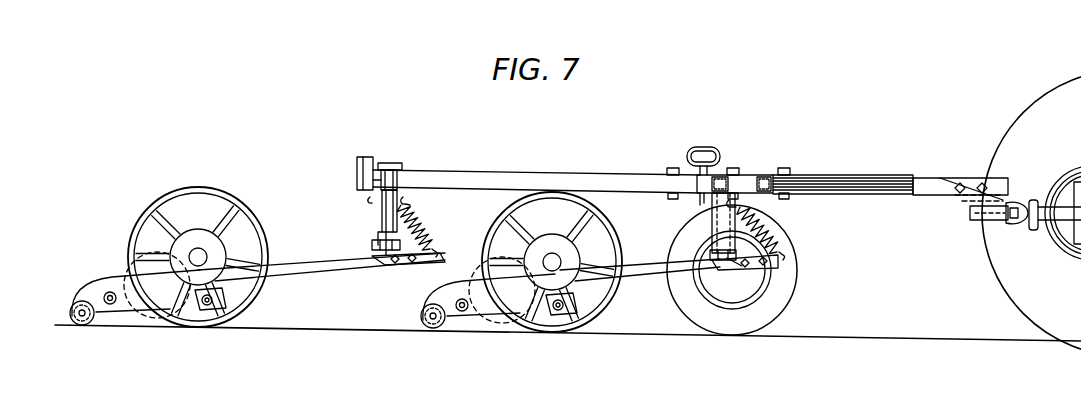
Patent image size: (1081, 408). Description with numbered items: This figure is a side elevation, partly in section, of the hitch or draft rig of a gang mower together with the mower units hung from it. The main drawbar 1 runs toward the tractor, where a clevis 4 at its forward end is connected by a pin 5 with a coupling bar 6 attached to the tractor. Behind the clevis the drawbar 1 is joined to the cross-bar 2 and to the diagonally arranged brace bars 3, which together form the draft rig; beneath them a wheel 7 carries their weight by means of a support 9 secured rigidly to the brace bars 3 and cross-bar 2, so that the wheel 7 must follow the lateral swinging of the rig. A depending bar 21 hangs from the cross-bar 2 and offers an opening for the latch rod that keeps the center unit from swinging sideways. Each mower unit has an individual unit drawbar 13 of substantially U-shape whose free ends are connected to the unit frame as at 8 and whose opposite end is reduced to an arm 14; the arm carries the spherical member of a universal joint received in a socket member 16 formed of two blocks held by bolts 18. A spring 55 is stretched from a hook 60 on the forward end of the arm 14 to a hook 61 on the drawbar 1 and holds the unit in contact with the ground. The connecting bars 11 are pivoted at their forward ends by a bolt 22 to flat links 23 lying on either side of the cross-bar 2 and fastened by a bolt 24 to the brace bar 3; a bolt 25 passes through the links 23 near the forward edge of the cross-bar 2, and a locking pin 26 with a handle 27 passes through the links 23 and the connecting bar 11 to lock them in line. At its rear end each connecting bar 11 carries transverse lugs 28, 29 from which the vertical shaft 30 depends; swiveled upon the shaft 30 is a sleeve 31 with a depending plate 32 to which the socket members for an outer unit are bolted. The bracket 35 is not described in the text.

The drawbar 1 is at (932, 198).
The cross-bar 2 is at (722, 185).
The brace bar 3 is at (872, 180).
The clevis 4 is at (1008, 224).
The pin 5 is at (1033, 199).
The coupling bar 6 is at (1062, 222).
The wheel 7 is at (797, 268).
The connection of unit drawbar to unit frame 8 is at (560, 308).
The support 9 is at (740, 283).
The connecting bar 11 is at (612, 156).
The individual unit drawbar 13 is at (300, 270).
The arm 14 is at (395, 262).
The socket member 16 is at (735, 262).
The bolt 18 is at (372, 246).
The depending bar 21 is at (712, 253).
The bolt 22 is at (672, 167).
The flat link 23 is at (763, 176).
The bolt 24 is at (786, 167).
The bolt 25 is at (735, 167).
The locking pin 26 is at (700, 200).
The handle 27 is at (703, 148).
The transverse lug 28 is at (393, 165).
The transverse lug 29 is at (377, 183).
The shaft 30 is at (397, 178).
The sleeve 31 is at (384, 215).
The depending plate 32 is at (377, 233).
The bracket 35 is at (357, 160).
The spring 55 is at (430, 238).
The hook 60 is at (438, 254).
The hook 61 is at (410, 200).